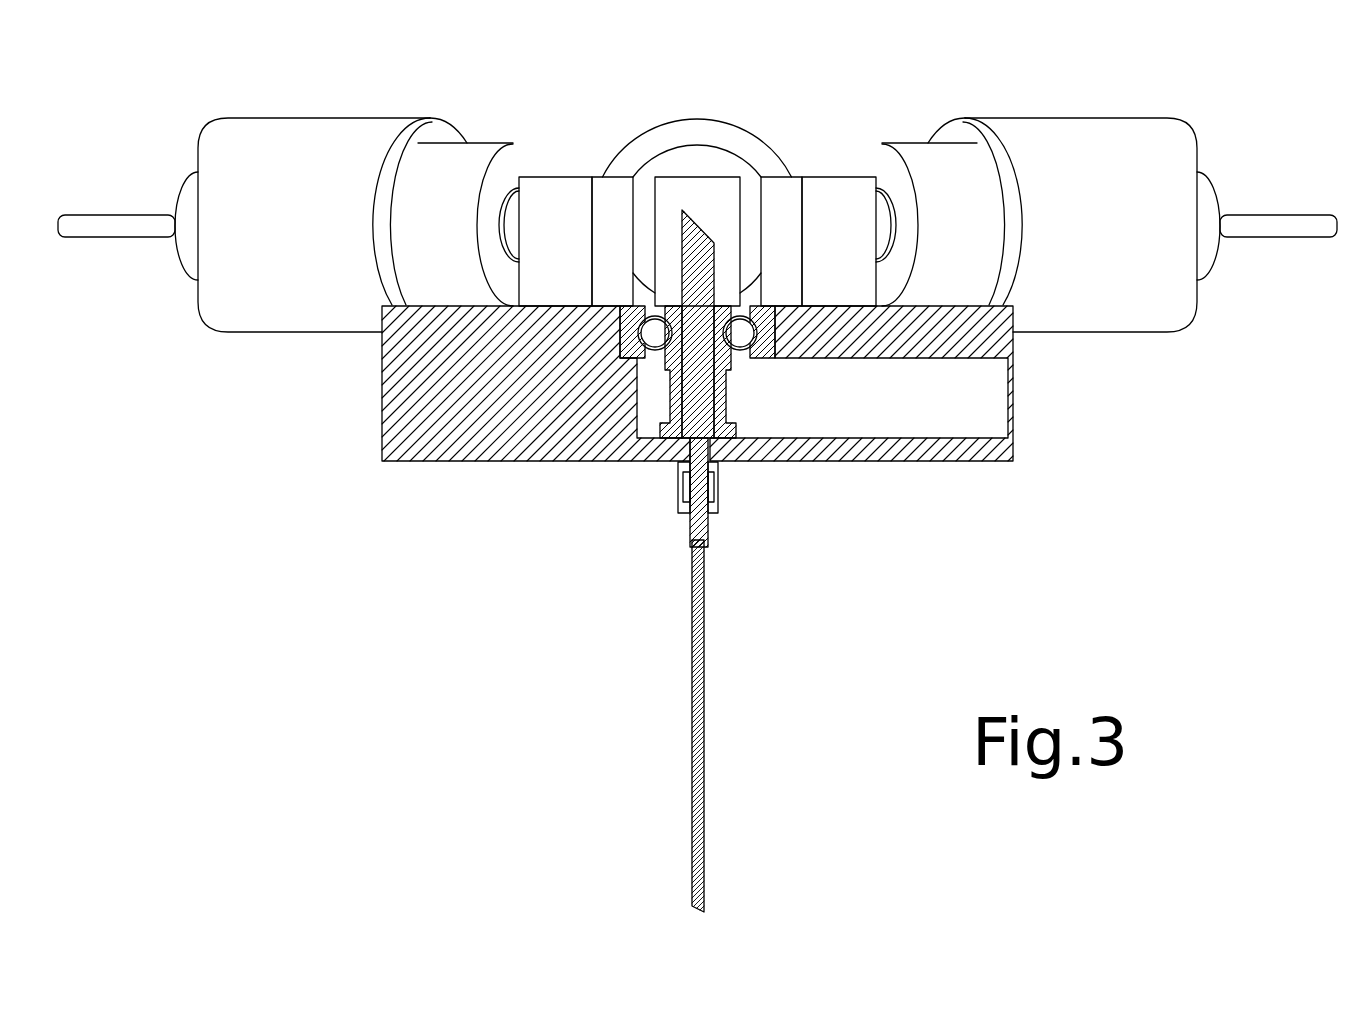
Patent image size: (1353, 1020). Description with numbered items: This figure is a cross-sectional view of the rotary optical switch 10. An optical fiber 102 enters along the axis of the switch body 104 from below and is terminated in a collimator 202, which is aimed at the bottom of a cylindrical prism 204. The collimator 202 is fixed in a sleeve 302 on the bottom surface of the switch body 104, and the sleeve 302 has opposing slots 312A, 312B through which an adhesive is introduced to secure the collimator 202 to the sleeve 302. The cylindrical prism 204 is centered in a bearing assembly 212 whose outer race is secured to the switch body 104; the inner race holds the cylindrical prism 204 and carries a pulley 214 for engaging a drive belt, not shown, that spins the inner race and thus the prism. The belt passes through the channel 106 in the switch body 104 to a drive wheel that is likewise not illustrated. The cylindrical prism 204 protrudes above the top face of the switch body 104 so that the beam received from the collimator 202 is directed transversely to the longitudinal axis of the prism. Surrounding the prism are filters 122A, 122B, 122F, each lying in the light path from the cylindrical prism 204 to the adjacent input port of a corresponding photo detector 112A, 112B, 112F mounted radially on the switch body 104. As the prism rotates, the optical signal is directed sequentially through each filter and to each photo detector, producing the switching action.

The rotary optical switch 10 is at (432, 650).
The optical fiber 102 is at (705, 610).
The switch body 104 is at (428, 462).
The channel 106 is at (1010, 398).
The photo detector 112A is at (757, 138).
The photo detector 112B is at (372, 117).
The photo detector 112F is at (1112, 118).
The filter 122A is at (677, 177).
The filter 122B is at (568, 177).
The filter 122F is at (828, 177).
The collimator 202 is at (707, 528).
The cylindrical prism 204 is at (700, 227).
The bearing assembly 212 is at (620, 336).
The pulley 214 is at (727, 399).
The sleeve 302 is at (716, 508).
The slot 312A is at (678, 486).
The slot 312B is at (718, 486).